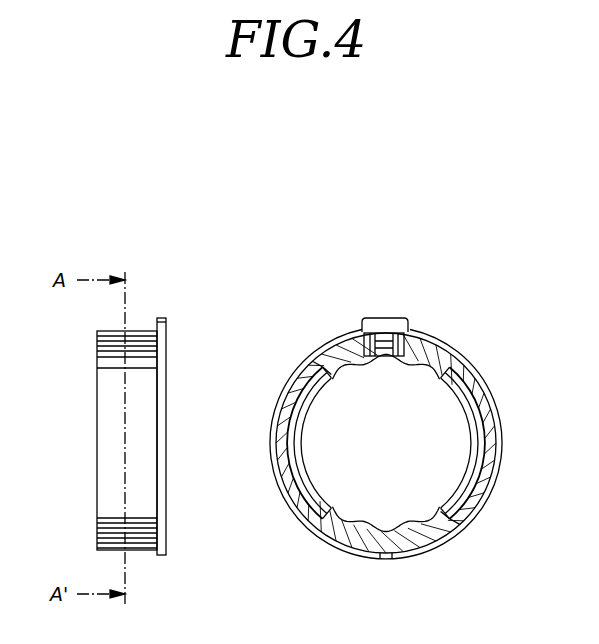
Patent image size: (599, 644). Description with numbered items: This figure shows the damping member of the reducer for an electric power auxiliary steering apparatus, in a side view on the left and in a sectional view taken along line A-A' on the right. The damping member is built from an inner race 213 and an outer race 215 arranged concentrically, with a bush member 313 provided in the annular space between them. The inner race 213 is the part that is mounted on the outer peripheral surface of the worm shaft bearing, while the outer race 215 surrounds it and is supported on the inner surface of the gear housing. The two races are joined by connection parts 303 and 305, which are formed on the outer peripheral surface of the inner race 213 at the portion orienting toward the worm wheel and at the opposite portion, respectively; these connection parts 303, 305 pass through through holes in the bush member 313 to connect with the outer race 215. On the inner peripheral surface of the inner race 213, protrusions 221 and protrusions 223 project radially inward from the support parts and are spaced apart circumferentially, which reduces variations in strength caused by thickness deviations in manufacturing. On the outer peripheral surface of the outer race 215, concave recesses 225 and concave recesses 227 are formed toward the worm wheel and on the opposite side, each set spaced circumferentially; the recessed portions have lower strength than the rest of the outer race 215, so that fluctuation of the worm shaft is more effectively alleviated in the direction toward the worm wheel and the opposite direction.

The outer race 215 is at (108, 453).
The concave recesses 227 is at (97, 344).
The concave recesses 225 is at (97, 531).
The bush member 313 is at (482, 432).
The inner race 213 is at (478, 482).
The connection part 305 is at (456, 358).
The protrusions 223 is at (418, 360).
The protrusions 221 is at (381, 526).
The connection part 303 is at (454, 521).